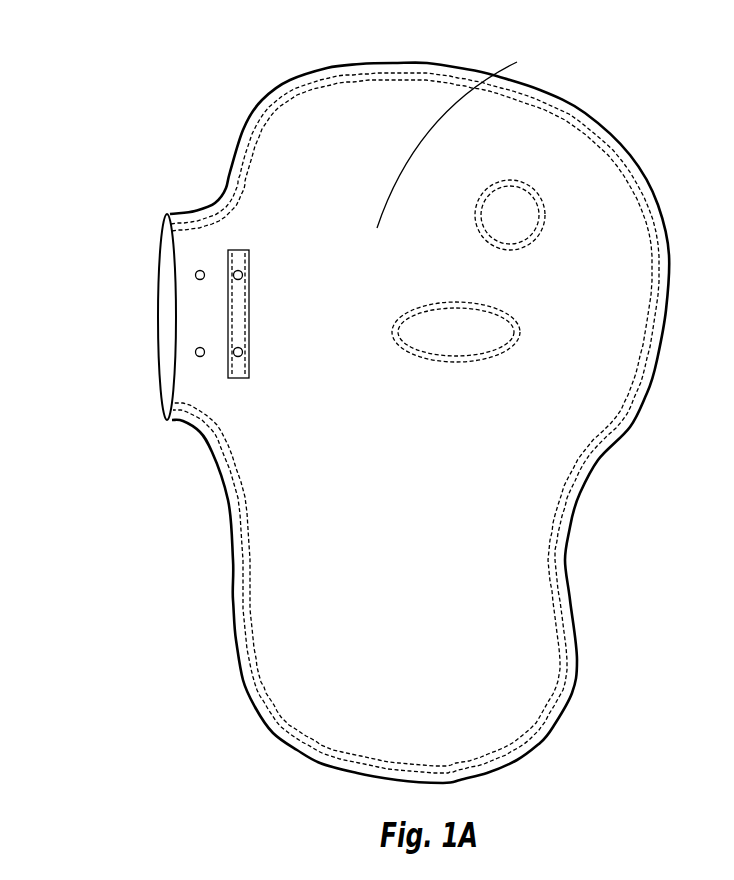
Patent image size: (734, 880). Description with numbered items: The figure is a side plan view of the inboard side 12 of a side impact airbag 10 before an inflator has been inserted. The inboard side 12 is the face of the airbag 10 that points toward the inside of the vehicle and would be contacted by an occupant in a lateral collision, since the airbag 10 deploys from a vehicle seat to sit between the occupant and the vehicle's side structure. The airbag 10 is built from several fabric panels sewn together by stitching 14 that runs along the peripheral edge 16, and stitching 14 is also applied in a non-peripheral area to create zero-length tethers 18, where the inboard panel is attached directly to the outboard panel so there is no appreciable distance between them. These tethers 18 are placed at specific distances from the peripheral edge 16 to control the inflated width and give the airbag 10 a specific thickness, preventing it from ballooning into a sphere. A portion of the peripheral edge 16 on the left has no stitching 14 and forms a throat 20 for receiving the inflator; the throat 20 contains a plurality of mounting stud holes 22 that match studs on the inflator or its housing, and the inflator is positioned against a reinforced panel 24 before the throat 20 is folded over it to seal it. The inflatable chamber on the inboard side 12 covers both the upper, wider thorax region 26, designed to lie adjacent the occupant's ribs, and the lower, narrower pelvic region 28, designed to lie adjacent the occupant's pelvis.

The side impact airbag 10 is at (655, 153).
The inboard side 12 is at (424, 560).
The stitching 14 is at (281, 104).
The peripheral edge 16 is at (232, 577).
The zero-length tethers 18 is at (480, 228).
The throat 20 is at (184, 312).
The mounting stud holes 22 is at (203, 272).
The reinforced panel 24 is at (242, 316).
The thorax region 26 is at (460, 140).
The pelvic region 28 is at (285, 660).